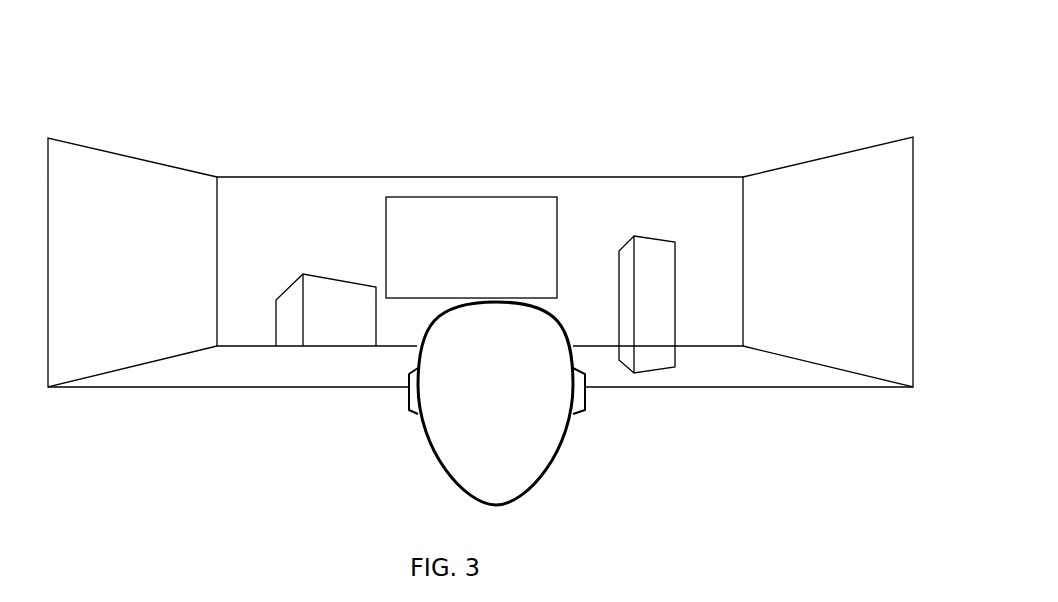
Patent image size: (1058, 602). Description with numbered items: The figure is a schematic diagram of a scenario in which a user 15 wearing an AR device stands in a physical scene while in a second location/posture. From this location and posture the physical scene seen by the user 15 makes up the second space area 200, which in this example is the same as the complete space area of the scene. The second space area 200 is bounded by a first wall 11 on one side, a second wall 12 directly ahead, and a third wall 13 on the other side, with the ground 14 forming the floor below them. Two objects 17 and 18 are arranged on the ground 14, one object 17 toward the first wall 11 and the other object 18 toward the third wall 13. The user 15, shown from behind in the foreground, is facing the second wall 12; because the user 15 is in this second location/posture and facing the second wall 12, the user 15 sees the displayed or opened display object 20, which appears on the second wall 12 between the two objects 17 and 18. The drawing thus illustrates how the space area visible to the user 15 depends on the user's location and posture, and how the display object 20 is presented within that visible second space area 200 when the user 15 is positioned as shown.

The second space area 200 is at (254, 140).
The first wall 11 is at (87, 166).
The second wall 12 is at (573, 215).
The third wall 13 is at (848, 169).
The ground 14 is at (236, 364).
The user 15 is at (527, 457).
The object 17 is at (335, 287).
The object 18 is at (658, 338).
The display object 20 is at (456, 227).